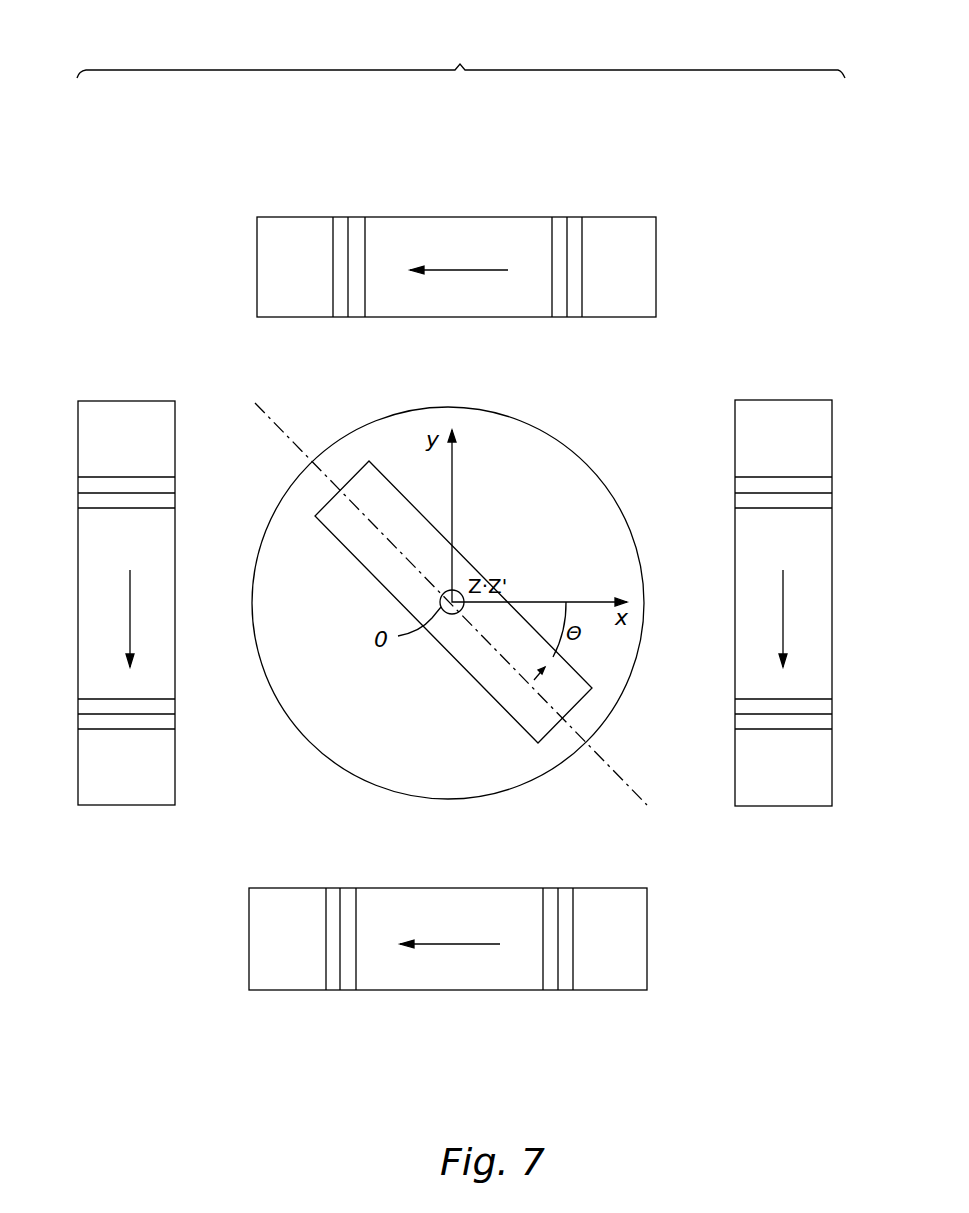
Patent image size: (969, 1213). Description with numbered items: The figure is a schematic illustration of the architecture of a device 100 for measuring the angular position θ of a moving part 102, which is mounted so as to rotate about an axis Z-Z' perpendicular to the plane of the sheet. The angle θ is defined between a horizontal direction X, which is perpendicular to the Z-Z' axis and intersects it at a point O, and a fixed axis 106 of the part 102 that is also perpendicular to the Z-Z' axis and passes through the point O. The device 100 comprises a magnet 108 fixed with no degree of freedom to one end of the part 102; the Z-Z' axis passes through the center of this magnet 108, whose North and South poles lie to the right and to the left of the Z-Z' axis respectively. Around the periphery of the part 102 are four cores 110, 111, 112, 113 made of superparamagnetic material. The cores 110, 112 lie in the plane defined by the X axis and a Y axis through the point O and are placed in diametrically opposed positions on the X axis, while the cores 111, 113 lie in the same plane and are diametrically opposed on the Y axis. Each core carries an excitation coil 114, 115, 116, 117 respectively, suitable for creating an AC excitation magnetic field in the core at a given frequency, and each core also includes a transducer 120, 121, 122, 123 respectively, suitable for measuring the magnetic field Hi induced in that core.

The device 100 is at (461, 58).
The moving part 102 is at (342, 708).
The fixed axis 106 is at (592, 745).
The magnet 108 is at (330, 487).
The core 110 is at (801, 636).
The core 111 is at (507, 242).
The core 112 is at (108, 636).
The core 113 is at (500, 967).
The excitation coil 114 is at (785, 475).
The excitation coil 115 is at (568, 217).
The excitation coil 116 is at (127, 472).
The excitation coil 117 is at (342, 990).
The transducer 120 is at (783, 729).
The transducer 121 is at (352, 217).
The transducer 122 is at (127, 729).
The transducer 123 is at (560, 990).